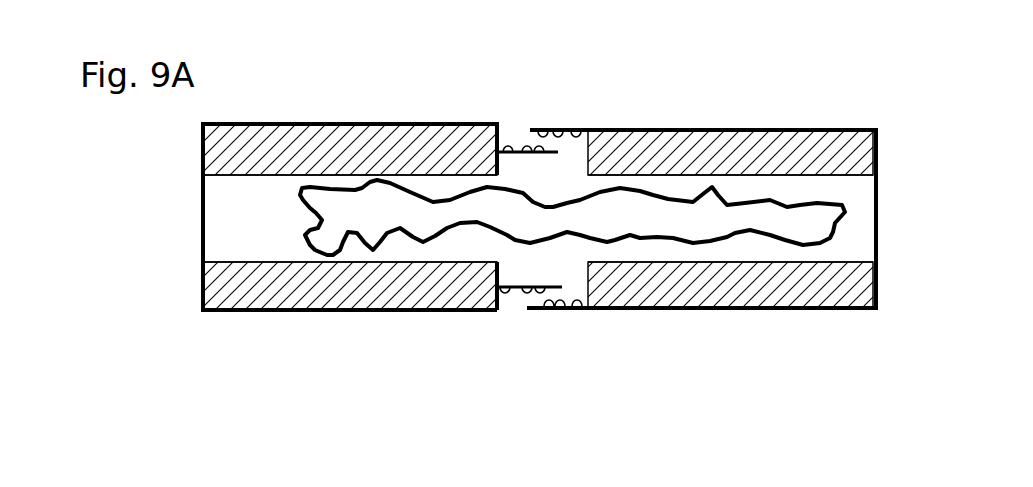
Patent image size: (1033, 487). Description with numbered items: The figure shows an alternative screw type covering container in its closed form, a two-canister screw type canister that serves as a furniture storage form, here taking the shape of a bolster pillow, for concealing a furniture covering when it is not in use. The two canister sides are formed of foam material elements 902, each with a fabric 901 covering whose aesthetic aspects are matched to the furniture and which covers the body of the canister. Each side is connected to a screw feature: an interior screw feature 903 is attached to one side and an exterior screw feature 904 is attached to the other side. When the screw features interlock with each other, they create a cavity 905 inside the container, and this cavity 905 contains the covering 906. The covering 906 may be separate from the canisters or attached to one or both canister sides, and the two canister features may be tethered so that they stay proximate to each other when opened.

The fabric covering 901 is at (352, 312).
The foam material element 902 is at (807, 170).
The interior screw feature 903 is at (507, 297).
The exterior screw feature 904 is at (557, 305).
The cavity 905 is at (267, 218).
The covering 906 is at (654, 190).